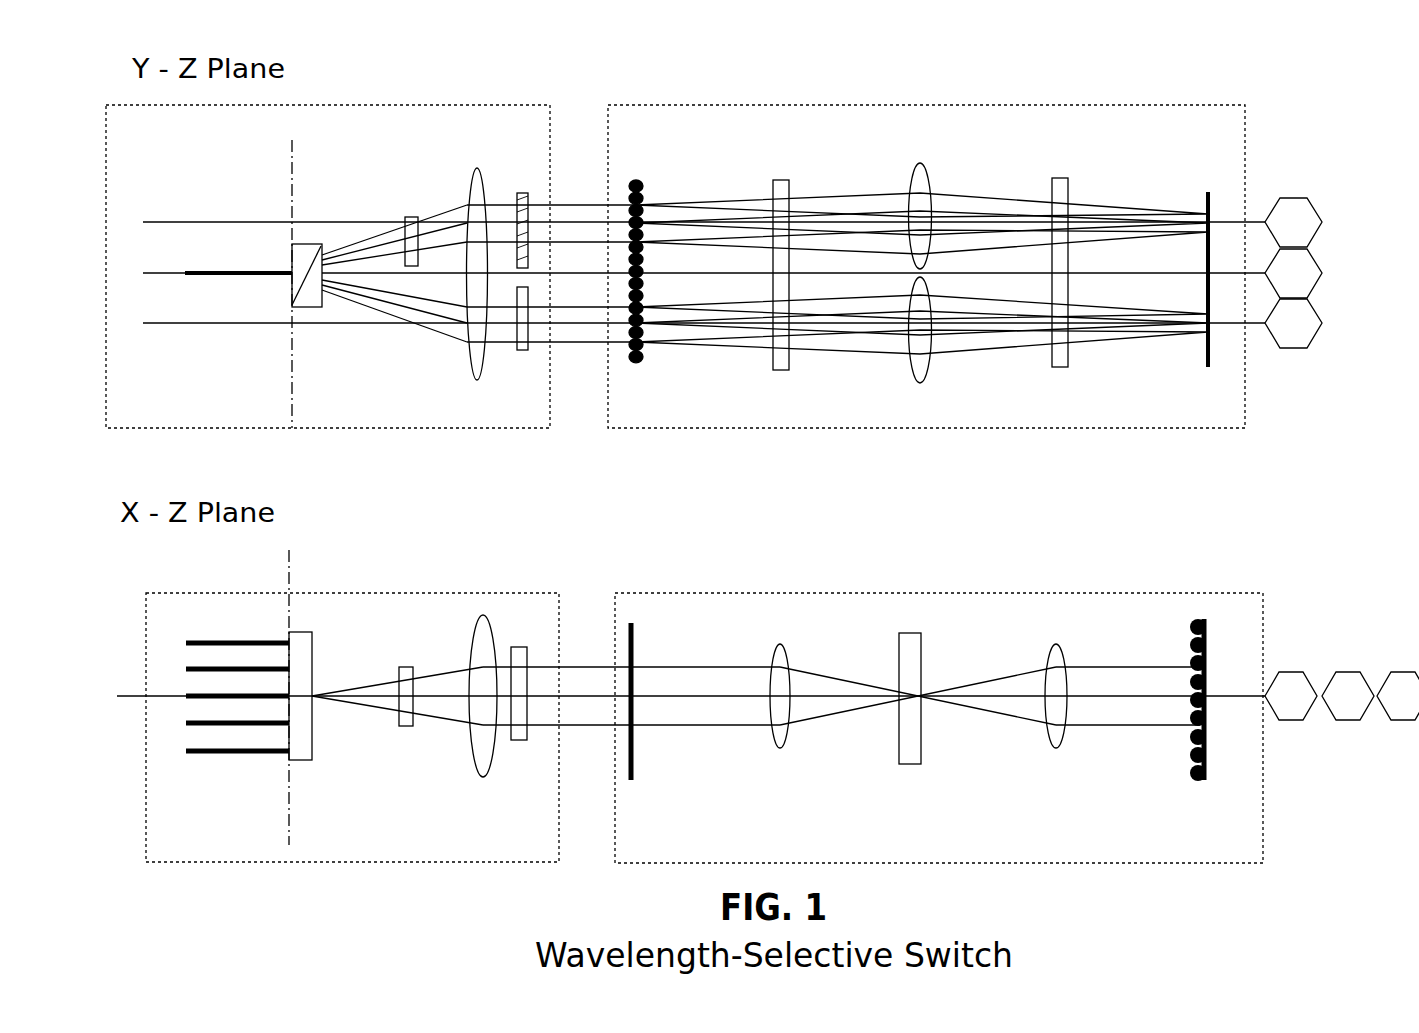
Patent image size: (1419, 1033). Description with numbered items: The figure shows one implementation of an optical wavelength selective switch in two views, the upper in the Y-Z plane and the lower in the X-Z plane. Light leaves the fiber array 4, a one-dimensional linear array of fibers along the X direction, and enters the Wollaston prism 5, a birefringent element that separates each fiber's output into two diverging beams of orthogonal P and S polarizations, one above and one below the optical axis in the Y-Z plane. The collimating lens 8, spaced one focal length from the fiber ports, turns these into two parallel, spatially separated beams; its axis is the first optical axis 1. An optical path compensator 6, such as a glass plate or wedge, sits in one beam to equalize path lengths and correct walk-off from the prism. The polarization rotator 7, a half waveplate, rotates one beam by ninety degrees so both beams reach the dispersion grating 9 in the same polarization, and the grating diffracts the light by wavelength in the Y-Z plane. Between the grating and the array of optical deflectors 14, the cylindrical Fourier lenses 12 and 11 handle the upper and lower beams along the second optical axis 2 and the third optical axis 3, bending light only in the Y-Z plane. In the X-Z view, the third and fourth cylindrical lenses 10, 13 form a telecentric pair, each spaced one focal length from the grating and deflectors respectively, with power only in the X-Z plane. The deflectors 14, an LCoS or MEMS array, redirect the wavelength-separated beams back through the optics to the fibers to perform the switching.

The first optical axis 1 is at (1293, 484).
The second optical axis 2 is at (1319, 459).
The third optical axis 3 is at (1342, 509).
The fiber array 4 is at (251, 290).
The Wollaston prism 5 is at (305, 318).
The optical path compensator 6 is at (406, 216).
The polarization rotator 7 is at (530, 352).
The collimating lens 8 is at (470, 367).
The dispersion grating 9 is at (643, 361).
The third cylindrical lens 10 is at (783, 372).
The first cylindrical lens 11 is at (941, 508).
The second cylindrical lens 12 is at (922, 385).
The fourth cylindrical lens 13 is at (1060, 369).
The array of optical deflectors 14 is at (1213, 367).